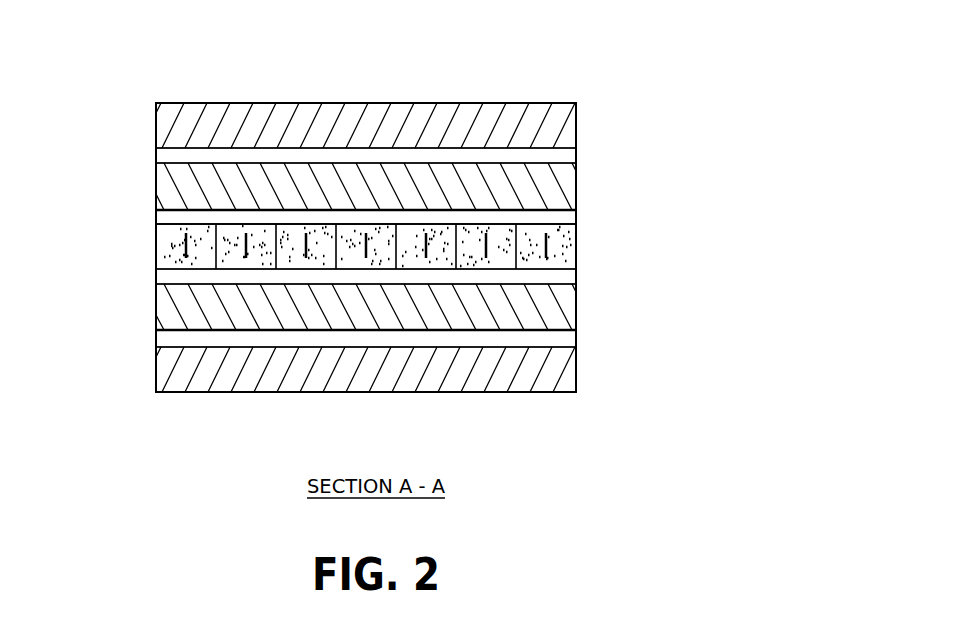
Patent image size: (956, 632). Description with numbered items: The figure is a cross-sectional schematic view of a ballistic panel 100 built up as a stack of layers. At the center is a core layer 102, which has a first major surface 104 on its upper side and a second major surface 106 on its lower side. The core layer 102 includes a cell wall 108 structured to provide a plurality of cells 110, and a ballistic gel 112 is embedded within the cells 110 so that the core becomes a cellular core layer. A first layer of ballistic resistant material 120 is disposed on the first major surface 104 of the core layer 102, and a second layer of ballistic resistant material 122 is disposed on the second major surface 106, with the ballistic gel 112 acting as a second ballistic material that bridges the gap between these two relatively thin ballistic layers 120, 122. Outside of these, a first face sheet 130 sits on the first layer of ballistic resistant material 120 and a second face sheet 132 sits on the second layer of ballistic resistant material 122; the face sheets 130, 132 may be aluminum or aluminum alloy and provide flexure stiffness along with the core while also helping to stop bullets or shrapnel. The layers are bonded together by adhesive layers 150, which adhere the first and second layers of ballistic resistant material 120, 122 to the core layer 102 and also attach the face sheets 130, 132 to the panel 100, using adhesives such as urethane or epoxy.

The ballistic panel 100 is at (637, 44).
The core layer 102 is at (577, 250).
The first major surface 104 is at (534, 224).
The second major surface 106 is at (542, 270).
The cell wall 108 is at (183, 243).
The cells 110 is at (192, 229).
The ballistic gel 112 is at (468, 240).
The first layer of ballistic resistant material 120 is at (156, 188).
The second layer of ballistic resistant material 122 is at (156, 307).
The first face sheet 130 is at (577, 128).
The second face sheet 132 is at (518, 392).
The adhesive layer 150 is at (577, 155).